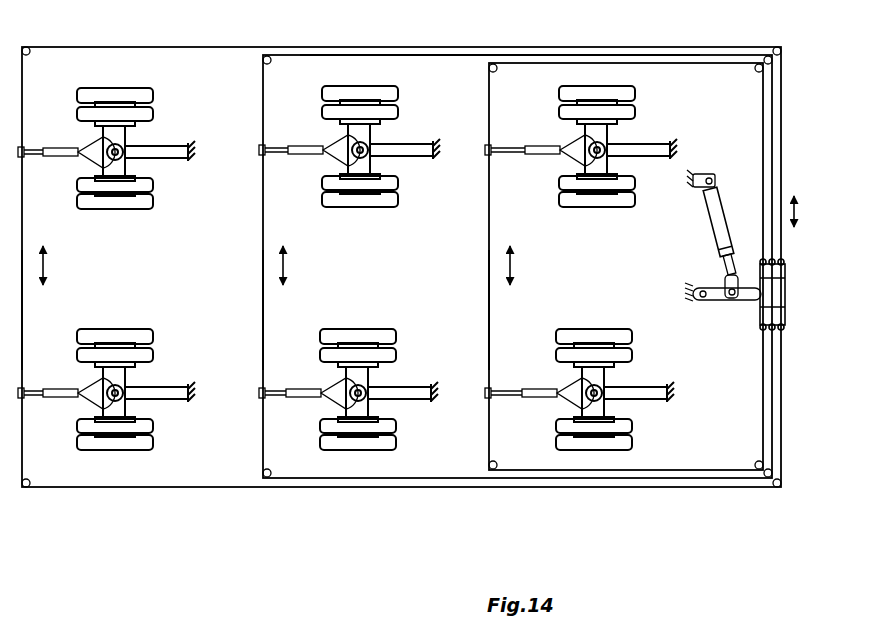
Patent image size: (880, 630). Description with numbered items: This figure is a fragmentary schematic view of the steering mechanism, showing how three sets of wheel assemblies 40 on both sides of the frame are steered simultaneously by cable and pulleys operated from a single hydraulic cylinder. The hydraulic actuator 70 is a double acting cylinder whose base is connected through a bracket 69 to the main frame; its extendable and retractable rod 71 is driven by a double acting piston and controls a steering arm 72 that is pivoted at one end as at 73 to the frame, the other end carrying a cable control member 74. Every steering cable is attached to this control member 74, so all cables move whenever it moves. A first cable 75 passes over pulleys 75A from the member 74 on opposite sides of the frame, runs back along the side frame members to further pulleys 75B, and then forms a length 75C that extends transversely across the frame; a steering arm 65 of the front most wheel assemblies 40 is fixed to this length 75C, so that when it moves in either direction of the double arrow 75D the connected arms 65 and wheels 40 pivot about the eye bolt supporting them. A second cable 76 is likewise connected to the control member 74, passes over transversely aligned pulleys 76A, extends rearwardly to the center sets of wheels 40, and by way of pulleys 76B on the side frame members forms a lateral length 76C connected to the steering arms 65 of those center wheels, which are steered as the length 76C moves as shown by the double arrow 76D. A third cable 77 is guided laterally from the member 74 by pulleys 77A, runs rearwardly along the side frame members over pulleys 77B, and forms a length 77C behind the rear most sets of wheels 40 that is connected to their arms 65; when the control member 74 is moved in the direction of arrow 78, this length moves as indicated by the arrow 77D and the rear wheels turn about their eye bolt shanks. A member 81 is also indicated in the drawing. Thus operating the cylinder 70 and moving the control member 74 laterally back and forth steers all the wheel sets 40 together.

The wheel assembly 40 is at (141, 74).
The steering arm 65 is at (58, 158).
The bracket 69 is at (708, 173).
The hydraulic actuator 70 is at (712, 220).
The rod 71 is at (724, 268).
The steering arm 72 is at (722, 302).
The pivot 73 is at (704, 301).
The cable control member 74 is at (775, 292).
The cable 75 is at (762, 97).
The pulleys 75A is at (757, 65).
The pulleys 75B is at (497, 72).
The cable length 75C is at (489, 308).
The double arrow 75D is at (513, 265).
The second cable 76 is at (772, 163).
The pulleys 76A is at (768, 57).
The pulleys 76B is at (272, 62).
The cable length 76C is at (263, 305).
The double arrow 76D is at (286, 265).
The third cable 77 is at (224, 47).
The pulleys 77A is at (780, 50).
The pulleys 77B is at (30, 52).
The cable length 77C is at (22, 308).
The arrow 77D is at (46, 266).
The arrow 78 is at (797, 212).
The frame cross member 81 is at (438, 56).